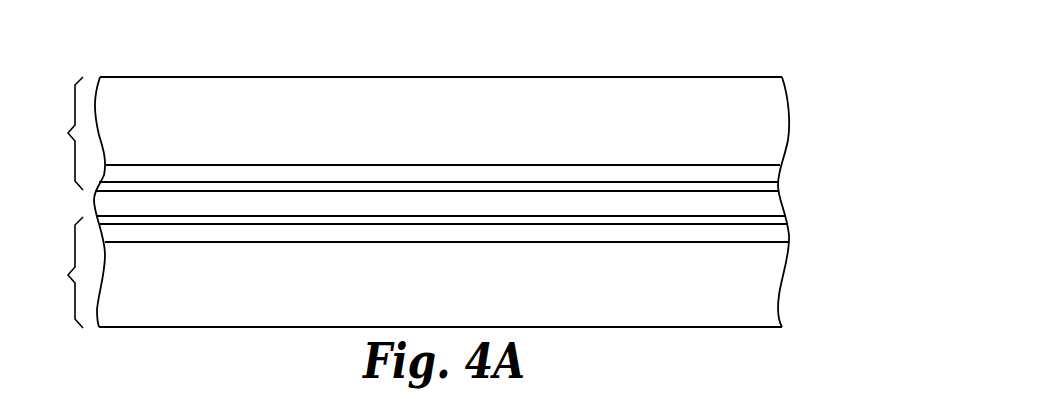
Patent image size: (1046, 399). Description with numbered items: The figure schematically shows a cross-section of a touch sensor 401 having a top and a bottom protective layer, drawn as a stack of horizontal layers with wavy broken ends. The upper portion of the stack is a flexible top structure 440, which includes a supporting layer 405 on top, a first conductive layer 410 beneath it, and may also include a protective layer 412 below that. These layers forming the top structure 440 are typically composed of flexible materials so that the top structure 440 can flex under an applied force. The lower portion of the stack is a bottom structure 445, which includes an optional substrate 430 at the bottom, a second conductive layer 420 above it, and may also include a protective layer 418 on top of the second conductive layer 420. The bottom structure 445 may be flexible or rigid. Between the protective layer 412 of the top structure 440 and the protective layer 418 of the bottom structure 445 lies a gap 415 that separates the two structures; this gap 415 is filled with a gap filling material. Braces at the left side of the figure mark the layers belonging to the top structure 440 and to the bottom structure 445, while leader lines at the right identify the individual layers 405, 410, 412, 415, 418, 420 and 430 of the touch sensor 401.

The multilayer structure 401 is at (610, 77).
The supporting layer 405 is at (738, 85).
The first conductive layer 410 is at (777, 173).
The protective layer 412 is at (772, 187).
The gap 415 is at (772, 200).
The protective layer 418 is at (782, 220).
The second conductive layer 420 is at (783, 235).
The substrate 430 is at (743, 320).
The flexible top structure 440 is at (51, 133).
The bottom structure 445 is at (51, 272).